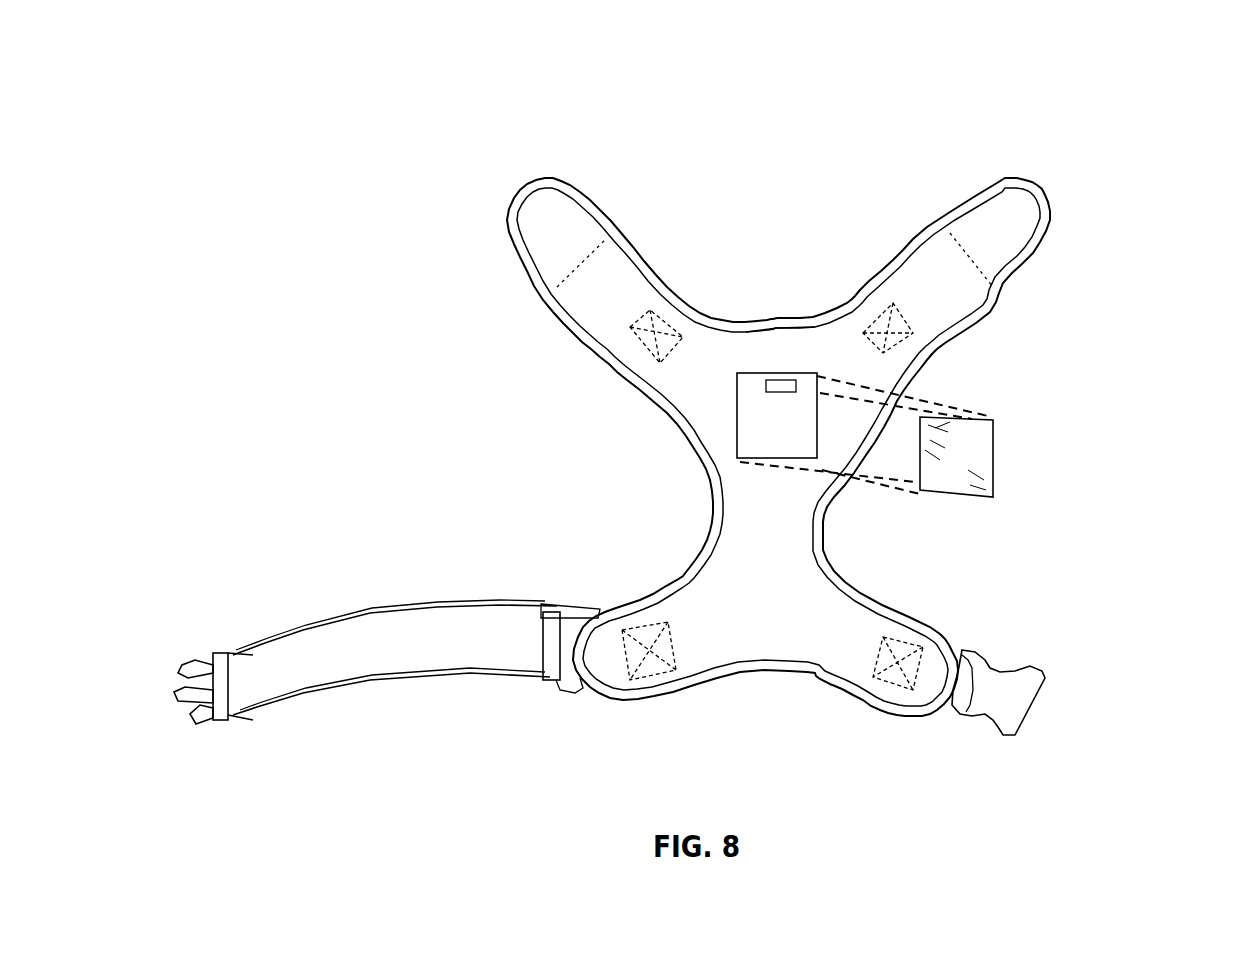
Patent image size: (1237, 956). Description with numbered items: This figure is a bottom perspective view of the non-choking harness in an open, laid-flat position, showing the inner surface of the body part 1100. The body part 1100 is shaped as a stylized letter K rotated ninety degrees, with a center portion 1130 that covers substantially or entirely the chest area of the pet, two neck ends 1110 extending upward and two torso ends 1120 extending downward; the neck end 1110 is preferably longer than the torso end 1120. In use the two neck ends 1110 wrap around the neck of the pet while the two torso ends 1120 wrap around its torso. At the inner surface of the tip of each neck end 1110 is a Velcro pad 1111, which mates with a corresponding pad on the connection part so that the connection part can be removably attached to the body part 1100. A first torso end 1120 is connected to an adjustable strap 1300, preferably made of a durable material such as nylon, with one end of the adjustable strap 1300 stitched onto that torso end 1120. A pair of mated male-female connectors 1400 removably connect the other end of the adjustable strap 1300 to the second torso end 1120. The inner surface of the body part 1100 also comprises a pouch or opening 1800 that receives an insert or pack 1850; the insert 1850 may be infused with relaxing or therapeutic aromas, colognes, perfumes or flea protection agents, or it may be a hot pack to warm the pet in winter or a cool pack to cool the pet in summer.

The body part 1100 is at (710, 497).
The neck end 1110 is at (588, 190).
The Velcro pad 1111 is at (543, 238).
The torso end 1120 is at (612, 603).
The center portion 1130 is at (813, 357).
The adjustable strap 1300 is at (420, 605).
The mated connector 1400 is at (215, 652).
The pouch or opening 1800 is at (778, 405).
The insert or pack 1850 is at (990, 420).